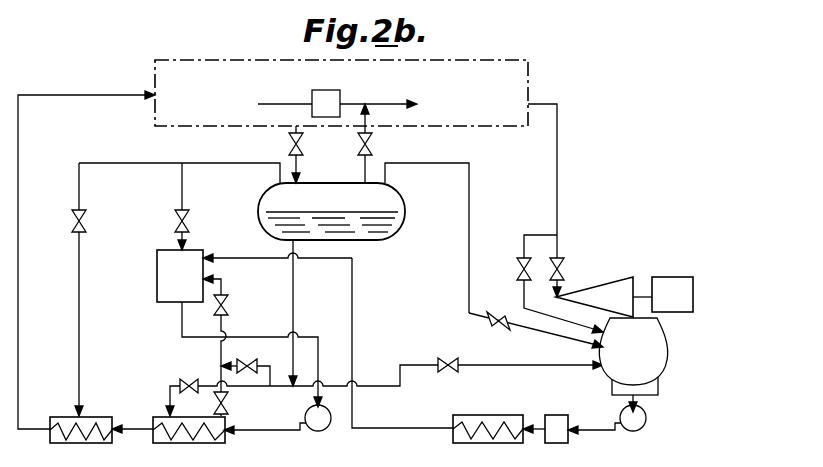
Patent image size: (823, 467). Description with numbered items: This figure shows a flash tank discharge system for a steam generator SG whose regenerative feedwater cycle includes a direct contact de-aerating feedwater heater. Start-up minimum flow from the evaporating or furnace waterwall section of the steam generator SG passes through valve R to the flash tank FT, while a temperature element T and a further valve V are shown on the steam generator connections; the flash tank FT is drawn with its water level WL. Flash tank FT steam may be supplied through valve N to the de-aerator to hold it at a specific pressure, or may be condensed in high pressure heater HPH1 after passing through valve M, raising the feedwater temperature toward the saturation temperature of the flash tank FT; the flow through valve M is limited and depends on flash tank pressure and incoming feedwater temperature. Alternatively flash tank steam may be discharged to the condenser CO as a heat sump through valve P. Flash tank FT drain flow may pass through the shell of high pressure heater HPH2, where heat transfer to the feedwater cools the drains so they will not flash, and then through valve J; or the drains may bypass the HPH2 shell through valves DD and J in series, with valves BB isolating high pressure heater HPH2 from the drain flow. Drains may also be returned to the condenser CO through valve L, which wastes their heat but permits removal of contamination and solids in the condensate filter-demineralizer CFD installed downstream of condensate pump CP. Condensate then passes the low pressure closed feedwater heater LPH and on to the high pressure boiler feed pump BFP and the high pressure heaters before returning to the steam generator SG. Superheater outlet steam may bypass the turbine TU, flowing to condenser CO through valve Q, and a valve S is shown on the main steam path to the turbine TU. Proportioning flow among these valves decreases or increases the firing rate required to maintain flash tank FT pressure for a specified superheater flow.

The steam generator SG is at (341, 93).
The temperature sensor T is at (337, 103).
The valve R is at (305, 154).
The valve V is at (374, 143).
The flash tank FT is at (375, 240).
The water level WL is at (393, 213).
The valve M is at (89, 289).
The valve N is at (191, 206).
The valve J is at (218, 345).
The valve DD is at (245, 365).
The valves BB is at (302, 390).
The valve L is at (520, 358).
The high pressure heater HPH1 is at (81, 442).
The high pressure heater HPH2 is at (189, 442).
The boiler feed pump BFP is at (277, 433).
The low pressure closed feedwater heater LPH is at (488, 440).
The condensate filter-demineralizer CFD is at (547, 440).
The condensate pump CP is at (607, 427).
The condenser CO is at (633, 356).
The turbine TU is at (654, 286).
The valve S is at (565, 266).
The valve Q is at (551, 284).
The valve P is at (536, 323).